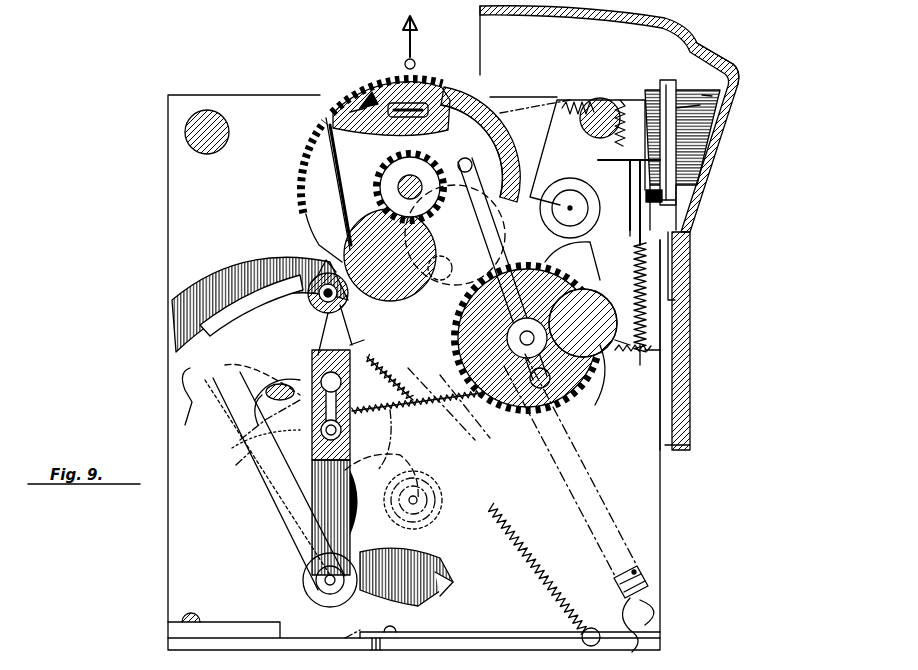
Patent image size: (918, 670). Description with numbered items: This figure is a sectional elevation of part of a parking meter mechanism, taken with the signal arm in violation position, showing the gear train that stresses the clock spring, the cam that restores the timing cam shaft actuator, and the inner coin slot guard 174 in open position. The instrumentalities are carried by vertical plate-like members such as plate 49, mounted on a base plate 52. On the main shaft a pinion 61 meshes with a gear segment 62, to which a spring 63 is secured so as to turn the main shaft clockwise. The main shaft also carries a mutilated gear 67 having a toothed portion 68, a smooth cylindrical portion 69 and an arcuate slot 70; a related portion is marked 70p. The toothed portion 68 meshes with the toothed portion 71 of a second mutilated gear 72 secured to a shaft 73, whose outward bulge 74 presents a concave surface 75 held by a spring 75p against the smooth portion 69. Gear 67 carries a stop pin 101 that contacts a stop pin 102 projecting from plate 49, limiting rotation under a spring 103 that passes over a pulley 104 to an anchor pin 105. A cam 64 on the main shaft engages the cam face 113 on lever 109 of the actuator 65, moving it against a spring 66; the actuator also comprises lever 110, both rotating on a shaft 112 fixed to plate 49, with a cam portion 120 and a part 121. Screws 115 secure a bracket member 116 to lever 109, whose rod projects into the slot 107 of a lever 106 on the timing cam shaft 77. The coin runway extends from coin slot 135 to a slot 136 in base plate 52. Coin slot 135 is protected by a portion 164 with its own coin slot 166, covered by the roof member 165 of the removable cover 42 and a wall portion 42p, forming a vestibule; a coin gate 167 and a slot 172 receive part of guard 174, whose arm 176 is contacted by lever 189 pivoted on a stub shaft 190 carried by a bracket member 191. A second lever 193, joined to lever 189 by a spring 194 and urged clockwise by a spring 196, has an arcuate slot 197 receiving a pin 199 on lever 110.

The removable cover 42 is at (640, 38).
The housing portion 42' 42p is at (730, 112).
The plate-like member 49 is at (252, 167).
The base plate 52 is at (516, 640).
The pinion 61 is at (430, 168).
The gear segment 62 is at (470, 225).
The spring 63 is at (598, 482).
The cam 64 is at (296, 212).
The actuator 65 is at (265, 553).
The spring 66 is at (515, 542).
The mutilated gear 67 is at (480, 91).
The toothed portion 68 is at (370, 84).
The smooth cylindrical portion 69 is at (508, 160).
The arcuate slot 70 is at (495, 142).
The hub 70' 70p is at (438, 280).
The toothed portion 71 is at (452, 340).
The mutilated gear 72 is at (625, 418).
The shaft 73 is at (585, 292).
The outward bulge 74 is at (541, 200).
The concave surface 75 is at (502, 265).
The spring 75p is at (617, 360).
The timing cam shaft 77 is at (312, 296).
The stop pin 101 is at (356, 98).
The stop pin 102 is at (438, 100).
The spring 103 is at (648, 262).
The pulley 104 is at (600, 108).
The anchor pin 105 is at (662, 351).
The lever 106 is at (236, 466).
The slot 107 is at (225, 428).
The lever 109 is at (340, 520).
The lever 110 is at (292, 497).
The shaft 112 is at (325, 580).
The cam face 113 is at (318, 262).
The screws 115 is at (342, 383).
The bracket member 116 is at (372, 352).
The cam 120 is at (443, 580).
The hook 121 is at (190, 397).
The coin slot 135 is at (668, 188).
The slot 136 is at (432, 640).
The portion 164 is at (705, 161).
The roof member 165 is at (708, 60).
The coin slot 166 is at (712, 130).
The coin gate 167 is at (738, 72).
The slot 172 is at (664, 125).
The coin slot guard 174 is at (700, 303).
The arm 176 is at (620, 160).
The lever 189 is at (455, 430).
The stub shaft 190 is at (440, 520).
The bracket member 191 is at (355, 626).
The lever 193 is at (395, 480).
The spring 194 is at (448, 398).
The spring 196 is at (428, 506).
The arcuate slot 197 is at (285, 403).
The pin 199 is at (245, 495).